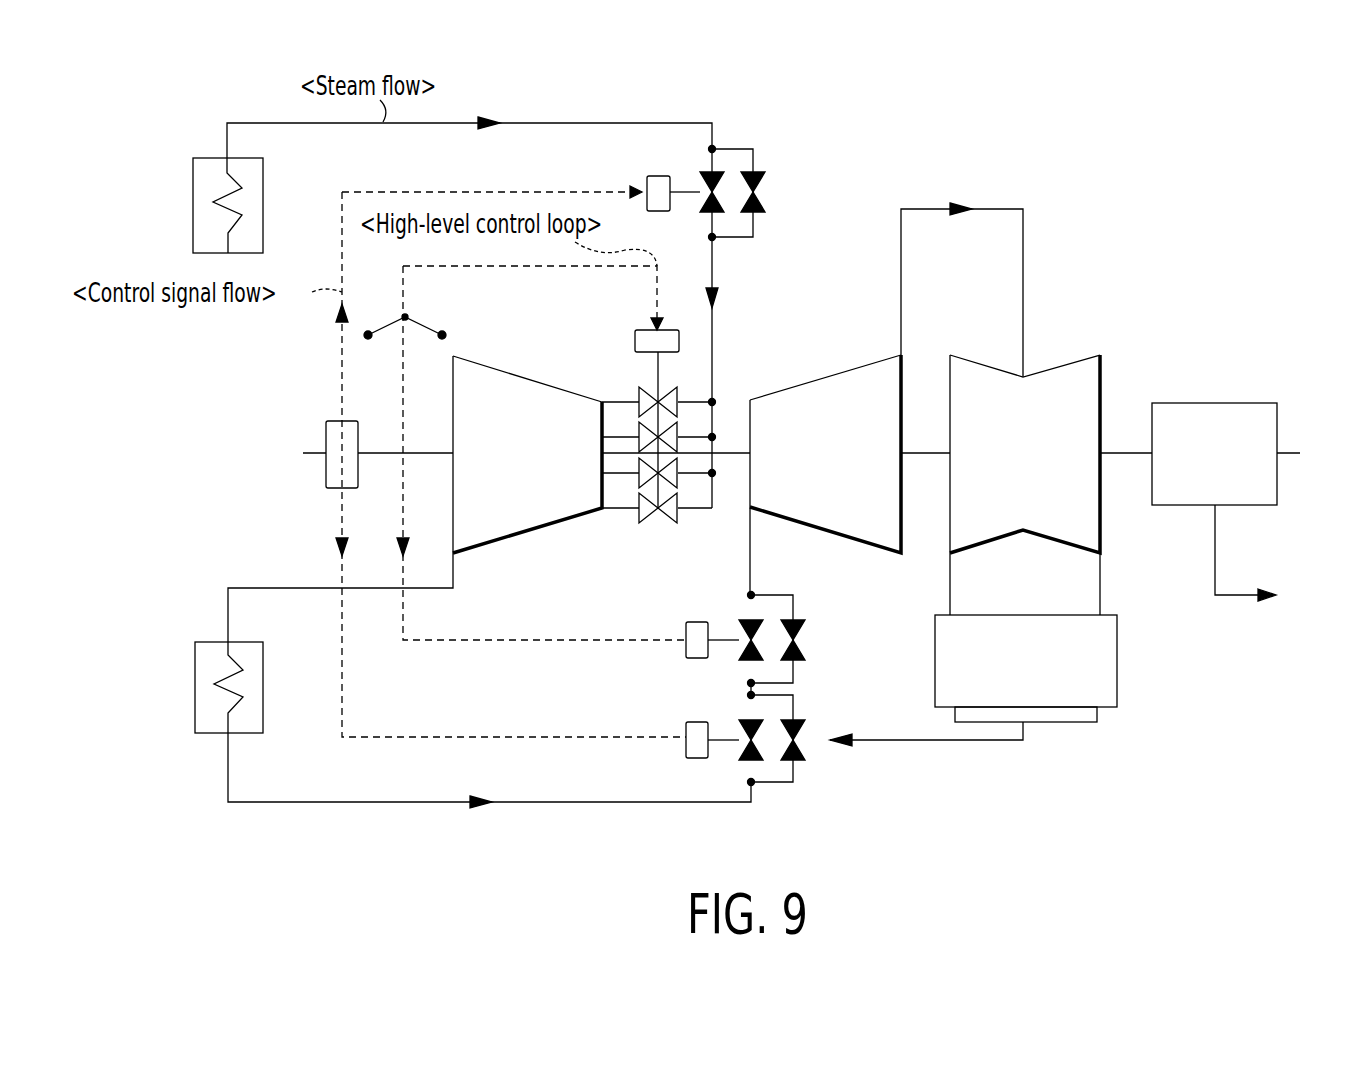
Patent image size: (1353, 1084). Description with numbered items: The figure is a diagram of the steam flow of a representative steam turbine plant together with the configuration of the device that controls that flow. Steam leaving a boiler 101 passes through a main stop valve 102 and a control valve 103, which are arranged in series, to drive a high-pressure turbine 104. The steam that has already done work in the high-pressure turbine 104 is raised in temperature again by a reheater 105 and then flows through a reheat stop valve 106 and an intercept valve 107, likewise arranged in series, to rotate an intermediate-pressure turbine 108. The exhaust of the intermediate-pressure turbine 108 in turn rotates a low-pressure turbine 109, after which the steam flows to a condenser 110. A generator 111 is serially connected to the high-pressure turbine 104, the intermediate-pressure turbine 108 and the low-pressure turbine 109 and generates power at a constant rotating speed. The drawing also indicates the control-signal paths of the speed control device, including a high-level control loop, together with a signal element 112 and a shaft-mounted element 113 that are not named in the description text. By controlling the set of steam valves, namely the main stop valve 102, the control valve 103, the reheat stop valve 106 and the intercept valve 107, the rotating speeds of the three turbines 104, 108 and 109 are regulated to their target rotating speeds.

The boiler 101 is at (193, 208).
The main stop valve 102 is at (766, 200).
The control valve 103 is at (657, 522).
The high-pressure turbine 104 is at (566, 396).
The reheater 105 is at (195, 700).
The reheat stop valve 106 is at (778, 784).
The intercept valve 107 is at (806, 647).
The intermediate-pressure turbine 108 is at (806, 390).
The low-pressure turbine 109 is at (1060, 372).
The condenser 110 is at (1117, 658).
The generator 111 is at (1204, 403).
The load setting device 112 is at (415, 322).
The speed detector 113 is at (326, 432).